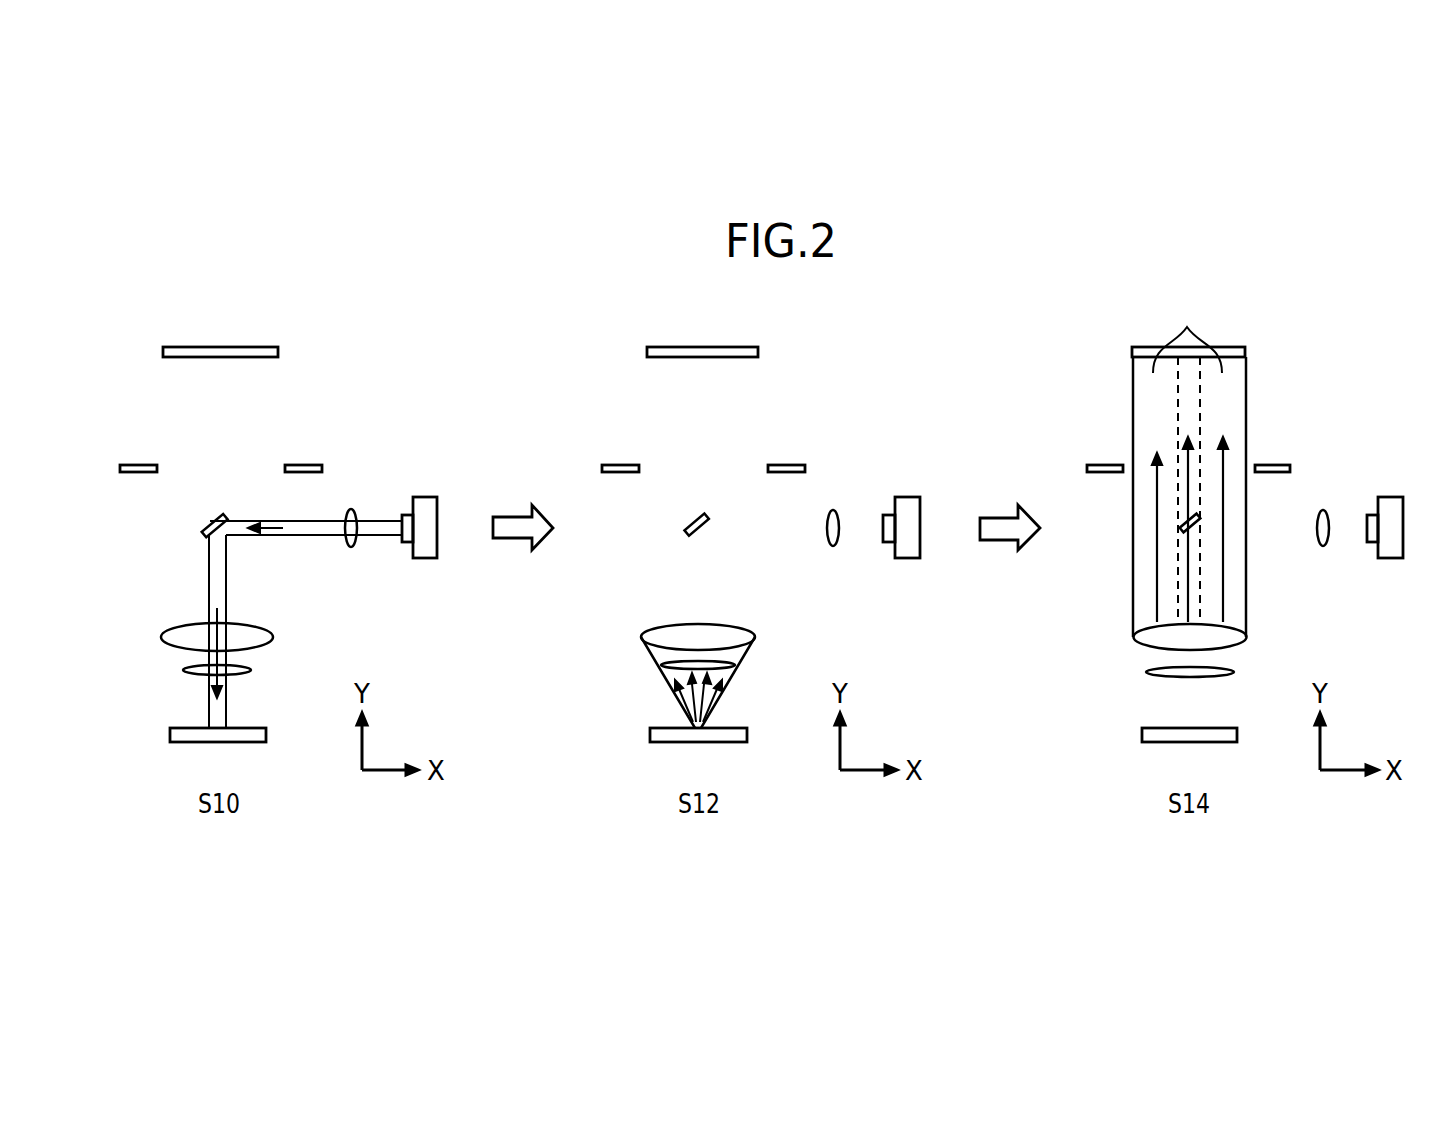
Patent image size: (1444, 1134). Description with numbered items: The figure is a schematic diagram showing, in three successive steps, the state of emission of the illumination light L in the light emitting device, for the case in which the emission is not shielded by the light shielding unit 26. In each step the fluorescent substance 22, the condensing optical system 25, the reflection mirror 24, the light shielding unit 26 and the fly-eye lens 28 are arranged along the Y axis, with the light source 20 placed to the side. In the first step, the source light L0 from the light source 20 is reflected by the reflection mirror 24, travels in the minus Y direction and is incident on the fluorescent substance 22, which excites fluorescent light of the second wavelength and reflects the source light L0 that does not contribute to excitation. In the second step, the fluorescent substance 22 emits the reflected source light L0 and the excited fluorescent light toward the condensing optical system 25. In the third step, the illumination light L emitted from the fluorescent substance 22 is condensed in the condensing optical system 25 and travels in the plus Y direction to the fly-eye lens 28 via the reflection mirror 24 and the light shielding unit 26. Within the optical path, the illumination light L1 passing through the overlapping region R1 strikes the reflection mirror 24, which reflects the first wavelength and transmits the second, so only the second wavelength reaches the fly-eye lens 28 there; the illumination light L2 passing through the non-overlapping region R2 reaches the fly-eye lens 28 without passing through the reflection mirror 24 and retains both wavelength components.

The light source 20 is at (426, 568).
The fluorescent substance 22 is at (267, 734).
The reflection mirror 24 is at (211, 518).
The condensing optical system 25 is at (287, 640).
The light shielding unit 26 is at (332, 466).
The fly-eye lens 28 is at (279, 351).
The source light L0 is at (320, 537).
The illumination light L is at (735, 677).
The illumination light L1 is at (1192, 490).
The illumination light L2 is at (1157, 567).
The overlapping region R1 is at (1200, 400).
The non-overlapping region R2 is at (1187, 334).